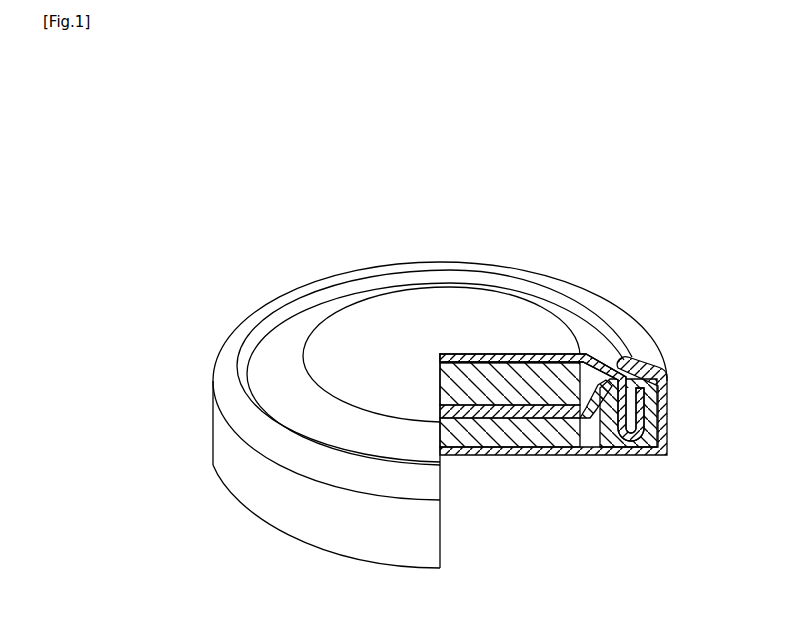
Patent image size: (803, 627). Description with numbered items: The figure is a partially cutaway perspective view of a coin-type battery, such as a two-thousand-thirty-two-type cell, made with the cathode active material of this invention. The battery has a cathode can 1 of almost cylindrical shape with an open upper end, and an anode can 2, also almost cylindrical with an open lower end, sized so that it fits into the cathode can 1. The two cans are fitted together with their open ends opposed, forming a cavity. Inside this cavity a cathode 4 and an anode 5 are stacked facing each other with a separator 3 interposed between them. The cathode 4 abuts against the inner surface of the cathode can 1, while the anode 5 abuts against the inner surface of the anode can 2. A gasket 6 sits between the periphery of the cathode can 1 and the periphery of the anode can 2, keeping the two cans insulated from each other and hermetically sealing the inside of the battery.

The cathode can 1 is at (665, 440).
The anode can 2 is at (486, 352).
The separator 3 is at (470, 412).
The cathode 4 is at (512, 433).
The anode 5 is at (527, 390).
The gasket 6 is at (656, 398).